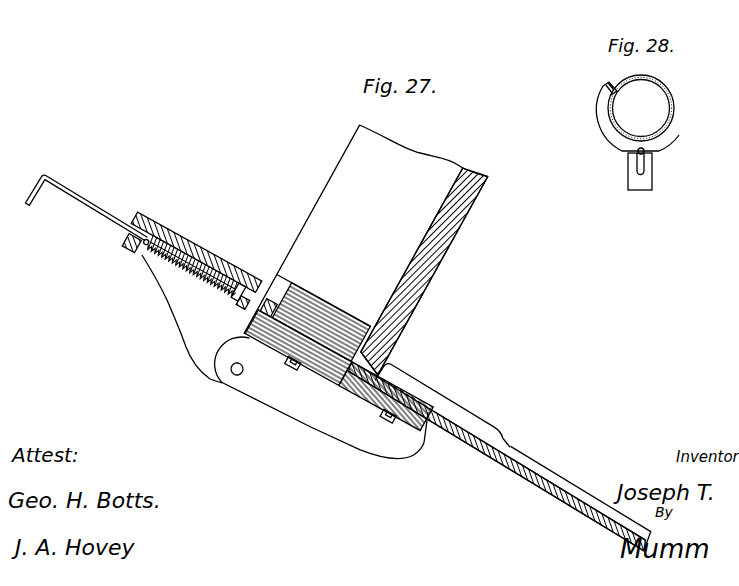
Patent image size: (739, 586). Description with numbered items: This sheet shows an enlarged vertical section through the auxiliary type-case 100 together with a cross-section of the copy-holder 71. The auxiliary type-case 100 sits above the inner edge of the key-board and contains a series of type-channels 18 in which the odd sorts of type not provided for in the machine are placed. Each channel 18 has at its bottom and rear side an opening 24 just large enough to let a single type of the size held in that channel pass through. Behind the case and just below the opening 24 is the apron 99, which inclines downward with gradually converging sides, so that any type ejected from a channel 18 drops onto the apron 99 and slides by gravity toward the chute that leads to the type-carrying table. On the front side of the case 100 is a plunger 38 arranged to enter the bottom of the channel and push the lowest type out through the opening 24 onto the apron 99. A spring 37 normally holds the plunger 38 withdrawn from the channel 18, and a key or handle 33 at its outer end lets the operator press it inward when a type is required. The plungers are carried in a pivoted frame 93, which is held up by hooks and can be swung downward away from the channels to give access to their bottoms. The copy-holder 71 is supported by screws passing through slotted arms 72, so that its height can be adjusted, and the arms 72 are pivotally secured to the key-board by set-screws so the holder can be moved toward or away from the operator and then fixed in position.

In FIG. 27, the type-channels 18 is at (366, 255).
In FIG. 27, the auxiliary type-case 100 is at (460, 229).
In FIG. 27, the pad a is at (350, 326).
In FIG. 27, the pivoted frame 93 is at (292, 368).
In FIG. 27, the opening 24 is at (388, 369).
In FIG. 27, the apron 99 is at (573, 496).
In FIG. 27, the plungers 38 is at (112, 216).
In FIG. 27, the keys or handles 33 is at (29, 187).
In FIG. 27, the springs 37 is at (190, 266).
In FIG. 28, the copy-holder 71 is at (676, 104).
In FIG. 28, the slotted arms 72 is at (652, 177).